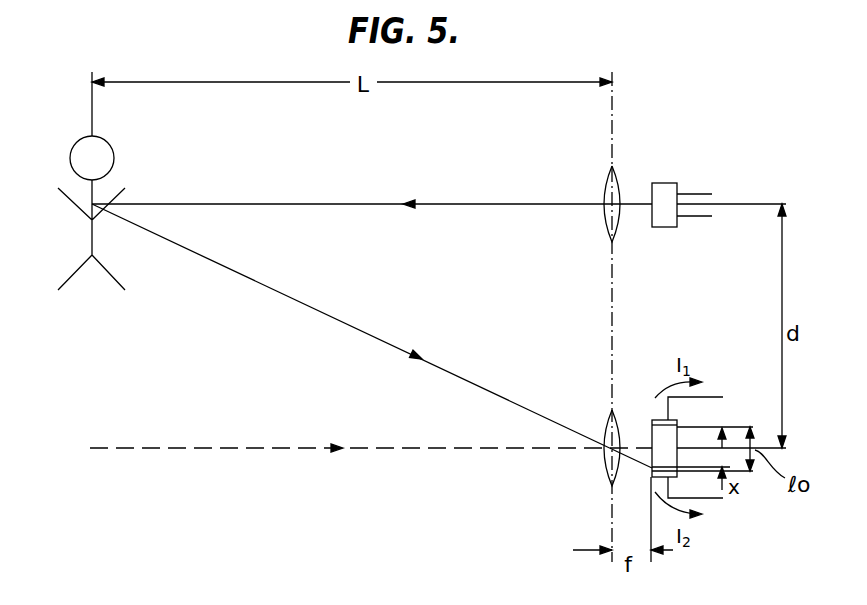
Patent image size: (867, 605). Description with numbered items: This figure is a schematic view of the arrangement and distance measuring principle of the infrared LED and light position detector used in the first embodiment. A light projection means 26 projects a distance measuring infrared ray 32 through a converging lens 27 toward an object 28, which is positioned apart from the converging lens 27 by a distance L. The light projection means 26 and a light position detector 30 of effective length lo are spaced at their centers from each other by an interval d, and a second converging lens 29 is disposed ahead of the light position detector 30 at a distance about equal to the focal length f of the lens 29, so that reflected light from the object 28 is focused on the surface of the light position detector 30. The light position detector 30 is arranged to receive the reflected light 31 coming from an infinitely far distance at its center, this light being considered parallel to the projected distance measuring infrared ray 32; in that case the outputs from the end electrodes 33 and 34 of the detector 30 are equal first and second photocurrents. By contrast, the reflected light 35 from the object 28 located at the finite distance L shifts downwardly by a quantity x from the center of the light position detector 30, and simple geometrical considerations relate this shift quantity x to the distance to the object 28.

The light projection means 26 is at (672, 188).
The converging lens 27 is at (620, 175).
The object 28 is at (92, 246).
The converging lens 29 is at (600, 481).
The light position detector 30 is at (670, 440).
The reflected light 31 is at (178, 451).
The distance measuring infrared ray 32 is at (508, 204).
The end electrode 33 is at (652, 420).
The end electrode 34 is at (651, 478).
The reflected light 35 is at (297, 301).